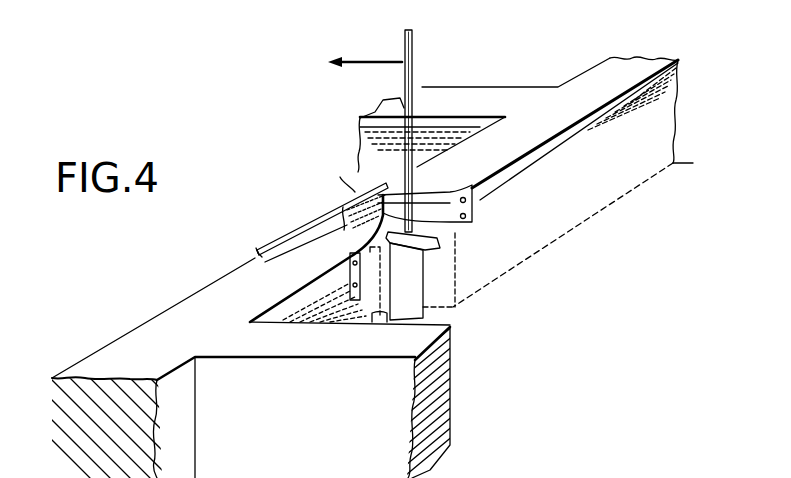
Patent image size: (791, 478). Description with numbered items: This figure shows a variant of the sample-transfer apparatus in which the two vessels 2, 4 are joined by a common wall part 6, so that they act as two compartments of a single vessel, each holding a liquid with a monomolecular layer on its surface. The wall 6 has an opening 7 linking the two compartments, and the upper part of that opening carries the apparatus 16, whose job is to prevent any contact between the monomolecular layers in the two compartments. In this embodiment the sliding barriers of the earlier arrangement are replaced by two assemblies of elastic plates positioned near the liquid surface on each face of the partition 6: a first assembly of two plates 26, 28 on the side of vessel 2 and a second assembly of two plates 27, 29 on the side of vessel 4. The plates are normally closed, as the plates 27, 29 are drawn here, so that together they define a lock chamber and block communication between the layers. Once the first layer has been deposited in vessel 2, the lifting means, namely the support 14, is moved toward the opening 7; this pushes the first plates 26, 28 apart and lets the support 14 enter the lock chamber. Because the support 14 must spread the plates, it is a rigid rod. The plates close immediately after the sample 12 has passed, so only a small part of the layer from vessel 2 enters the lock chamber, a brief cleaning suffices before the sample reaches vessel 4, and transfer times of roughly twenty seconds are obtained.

The vessel 2 is at (622, 289).
The vessel 4 is at (105, 308).
The common wall part 6 is at (492, 147).
The opening 7 is at (387, 313).
The sample 12 is at (440, 288).
The support 14 is at (412, 50).
The apparatus 16 is at (294, 218).
The plate 26 is at (350, 235).
The plate 27 is at (256, 240).
The plate 28 is at (445, 220).
The plate 29 is at (360, 192).